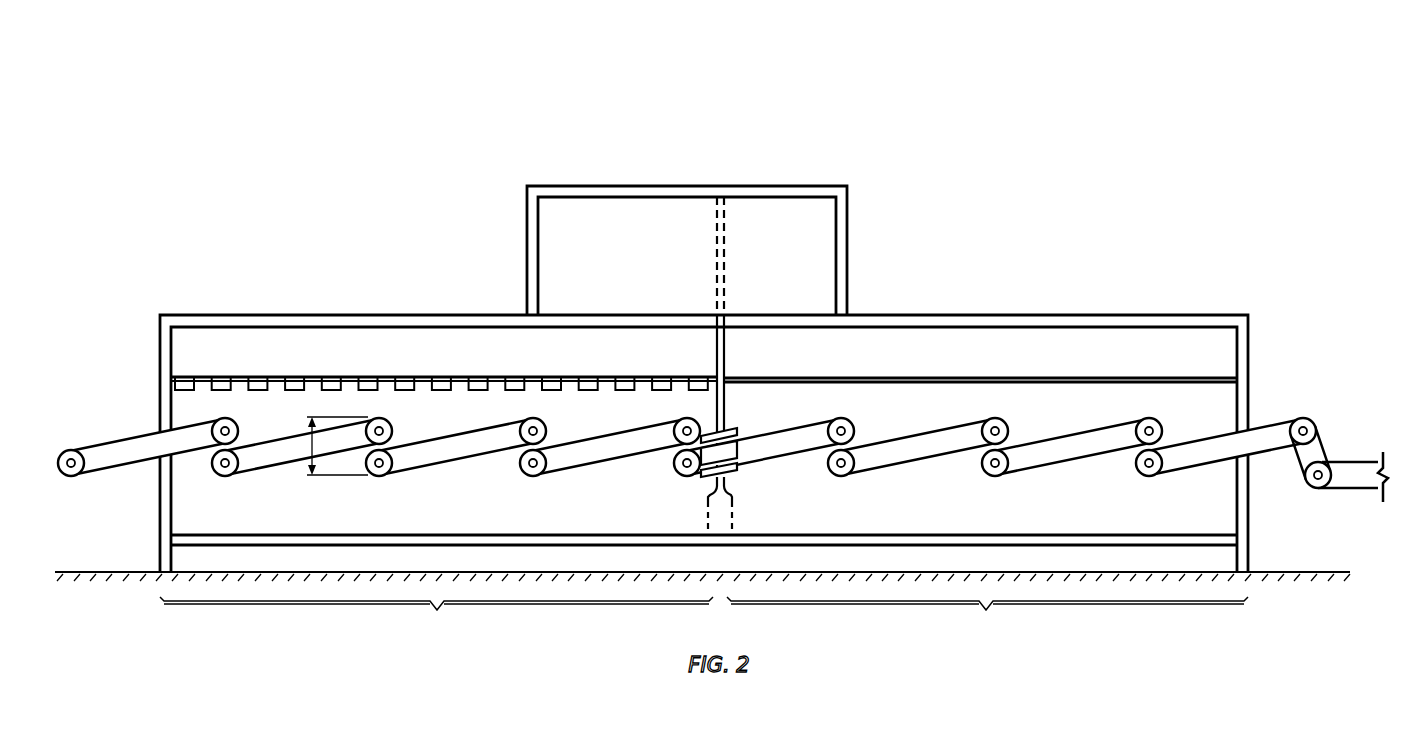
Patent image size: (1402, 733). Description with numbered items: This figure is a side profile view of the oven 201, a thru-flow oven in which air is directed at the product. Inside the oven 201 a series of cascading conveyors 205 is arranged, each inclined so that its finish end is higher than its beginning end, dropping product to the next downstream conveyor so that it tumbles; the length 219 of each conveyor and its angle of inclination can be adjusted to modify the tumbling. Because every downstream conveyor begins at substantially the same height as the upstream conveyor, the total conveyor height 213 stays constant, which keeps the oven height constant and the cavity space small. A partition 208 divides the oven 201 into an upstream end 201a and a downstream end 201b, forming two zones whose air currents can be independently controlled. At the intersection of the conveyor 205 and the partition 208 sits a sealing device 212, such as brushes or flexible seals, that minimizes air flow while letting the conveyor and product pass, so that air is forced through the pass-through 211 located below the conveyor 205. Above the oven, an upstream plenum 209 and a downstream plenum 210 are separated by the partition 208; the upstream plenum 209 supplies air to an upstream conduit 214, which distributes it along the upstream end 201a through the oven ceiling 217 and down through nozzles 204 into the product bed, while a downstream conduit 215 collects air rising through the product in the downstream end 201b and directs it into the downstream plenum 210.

The oven 201 is at (762, 78).
The upstream end 201a is at (436, 622).
The downstream end 201b is at (987, 622).
The nozzles 204 is at (442, 380).
The cascading conveyor 205 is at (110, 472).
The partition 208 is at (727, 357).
The upstream plenum 209 is at (590, 242).
The downstream plenum 210 is at (797, 244).
The pass-through 211 is at (733, 496).
The sealing device 212 is at (738, 425).
The total conveyor height 213 is at (307, 447).
The upstream conduit 214 is at (418, 348).
The downstream conduit 215 is at (972, 348).
The oven ceiling 217 is at (316, 378).
The length of the conveyor 219 is at (367, 483).